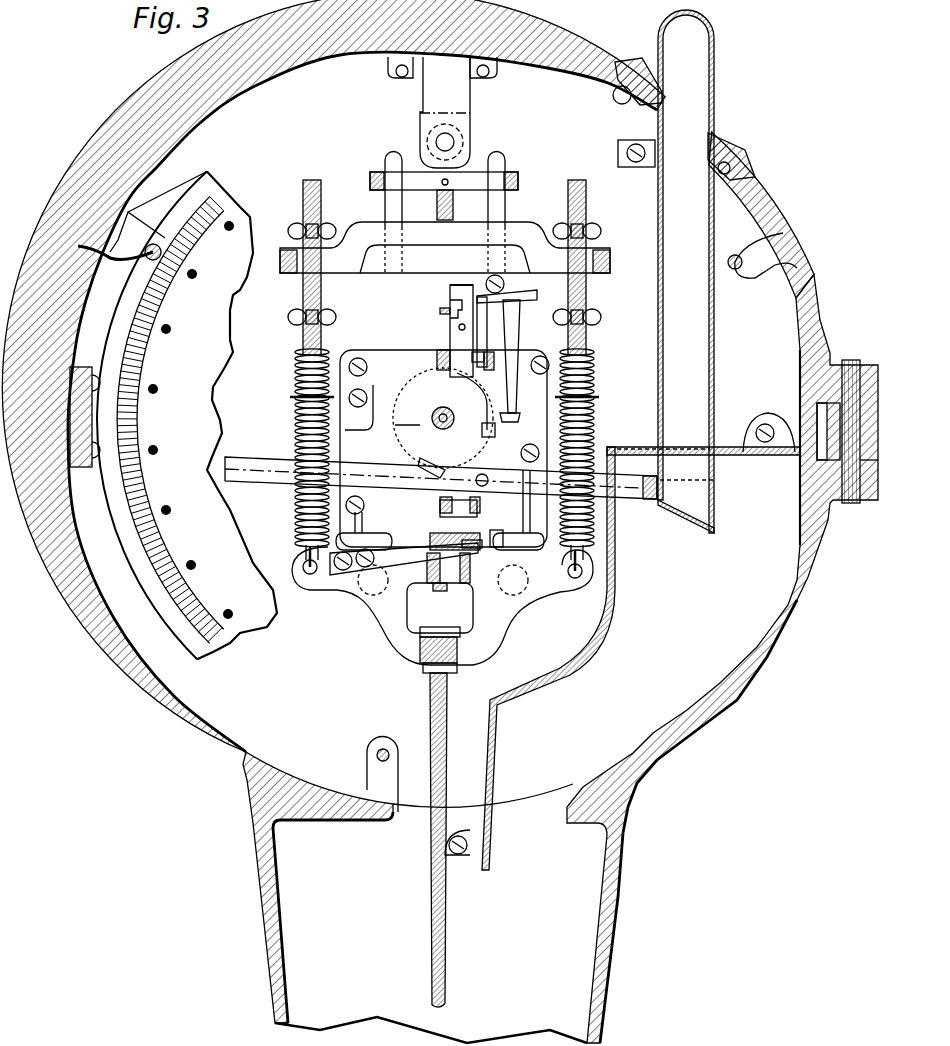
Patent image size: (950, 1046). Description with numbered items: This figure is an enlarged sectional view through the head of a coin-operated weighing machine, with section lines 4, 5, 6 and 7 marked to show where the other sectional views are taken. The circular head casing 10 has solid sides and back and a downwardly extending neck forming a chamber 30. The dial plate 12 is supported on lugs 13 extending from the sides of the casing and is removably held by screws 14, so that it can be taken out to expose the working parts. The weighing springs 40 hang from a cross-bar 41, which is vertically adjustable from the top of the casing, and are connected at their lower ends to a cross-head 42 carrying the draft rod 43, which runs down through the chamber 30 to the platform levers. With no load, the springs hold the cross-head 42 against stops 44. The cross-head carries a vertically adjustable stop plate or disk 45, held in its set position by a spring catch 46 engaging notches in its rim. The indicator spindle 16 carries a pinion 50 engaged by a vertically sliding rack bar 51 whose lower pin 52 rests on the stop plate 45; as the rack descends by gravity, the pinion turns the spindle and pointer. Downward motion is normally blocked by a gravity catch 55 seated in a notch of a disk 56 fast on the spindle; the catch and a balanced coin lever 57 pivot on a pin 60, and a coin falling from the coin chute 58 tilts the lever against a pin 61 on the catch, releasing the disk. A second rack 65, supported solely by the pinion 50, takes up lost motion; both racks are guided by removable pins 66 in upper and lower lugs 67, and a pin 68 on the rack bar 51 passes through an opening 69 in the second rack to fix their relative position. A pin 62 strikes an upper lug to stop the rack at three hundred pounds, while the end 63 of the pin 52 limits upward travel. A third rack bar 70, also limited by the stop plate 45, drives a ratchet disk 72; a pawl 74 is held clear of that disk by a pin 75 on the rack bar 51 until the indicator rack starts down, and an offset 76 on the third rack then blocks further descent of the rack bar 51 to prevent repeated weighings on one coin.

The section line 4 is at (445, 165).
The section line 5 is at (370, 175).
The section line 6 is at (340, 378).
The section line 7 is at (300, 530).
The head casing 10 is at (172, 147).
The dial plate 12 is at (238, 302).
The lugs 13 is at (437, 225).
The screws 14 is at (146, 256).
The indicator spindle 16 is at (432, 421).
The chamber 30 is at (311, 955).
The weighing springs 40 is at (292, 418).
The cross-bar 41 is at (533, 232).
The cross-head 42 is at (568, 590).
The draft rod 43 is at (431, 708).
The stops 44 is at (364, 542).
The stop plate or disk 45 is at (440, 628).
The spring catch 46 is at (420, 557).
The pinion 50 is at (443, 416).
The rack bar 51 is at (452, 296).
The pin 52 is at (440, 518).
The gravity catch 55 is at (497, 431).
The disk 56 is at (480, 404).
The coin lever 57 is at (441, 478).
The coin chute 58 is at (622, 440).
The pin 60 is at (488, 486).
The pin 61 is at (437, 460).
The pin 62 is at (439, 311).
The end of pin 63 is at (507, 549).
The second rack 65 is at (455, 340).
The pins 66 is at (420, 500).
The lugs 67 is at (489, 435).
The pin 68 is at (459, 328).
The opening 69 is at (489, 332).
The third rack bar 70 is at (462, 286).
The disk 72 is at (406, 393).
The pawl 74 is at (514, 417).
The pin 75 is at (530, 303).
The offset 76 is at (432, 538).